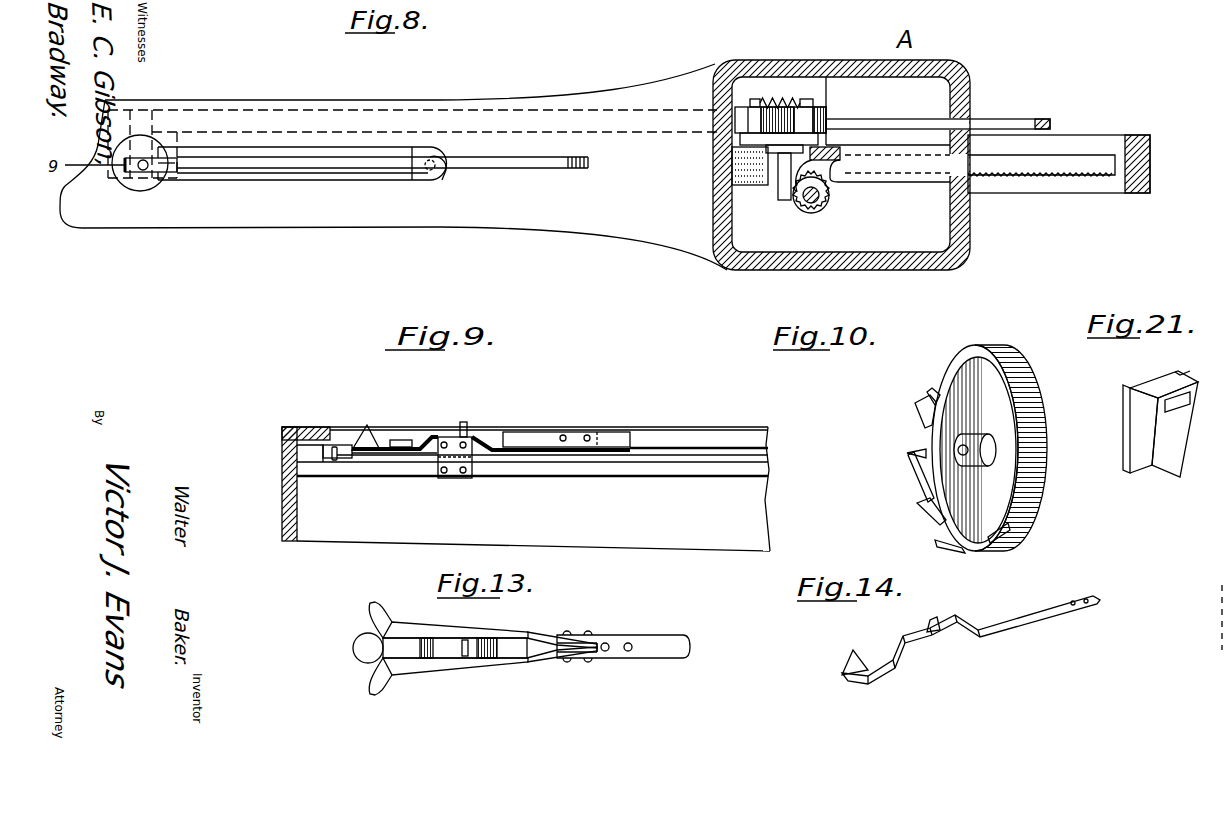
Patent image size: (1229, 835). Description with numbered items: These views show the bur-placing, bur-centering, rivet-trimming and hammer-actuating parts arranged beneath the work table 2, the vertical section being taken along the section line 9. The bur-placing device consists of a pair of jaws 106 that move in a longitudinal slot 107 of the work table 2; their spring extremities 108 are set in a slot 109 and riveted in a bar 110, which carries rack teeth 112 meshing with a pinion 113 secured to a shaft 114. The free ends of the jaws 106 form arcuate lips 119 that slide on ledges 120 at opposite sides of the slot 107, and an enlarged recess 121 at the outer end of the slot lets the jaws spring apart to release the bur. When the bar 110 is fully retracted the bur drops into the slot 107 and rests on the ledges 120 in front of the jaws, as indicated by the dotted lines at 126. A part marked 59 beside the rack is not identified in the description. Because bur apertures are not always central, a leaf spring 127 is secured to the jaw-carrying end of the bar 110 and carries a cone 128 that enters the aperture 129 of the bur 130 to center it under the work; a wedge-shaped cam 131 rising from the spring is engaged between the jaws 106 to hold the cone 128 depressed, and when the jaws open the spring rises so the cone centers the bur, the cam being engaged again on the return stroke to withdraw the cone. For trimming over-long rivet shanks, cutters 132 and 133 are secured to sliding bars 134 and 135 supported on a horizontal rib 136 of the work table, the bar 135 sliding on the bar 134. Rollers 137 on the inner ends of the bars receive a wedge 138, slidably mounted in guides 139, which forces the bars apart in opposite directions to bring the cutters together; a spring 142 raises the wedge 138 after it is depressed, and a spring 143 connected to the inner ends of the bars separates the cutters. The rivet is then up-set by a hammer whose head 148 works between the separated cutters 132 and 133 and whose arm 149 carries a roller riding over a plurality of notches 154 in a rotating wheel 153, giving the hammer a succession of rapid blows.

In FIG. 8, the work table 2 is at (298, 218).
In FIG. 8, the section line 9 is at (221, 180).
In FIG. 8, the tube 59 is at (1098, 142).
In FIG. 8, the jaws 106 is at (497, 166).
In FIG. 9, the jaws 106 is at (483, 434).
In FIG. 13, the jaws 106 is at (428, 630).
In FIG. 8, the longitudinal slot 107 is at (365, 176).
In FIG. 13, the spring extremities 108 is at (545, 636).
In FIG. 13, the slot 109 is at (583, 655).
In FIG. 13, the bar 110 is at (642, 629).
In FIG. 8, the rack teeth 112 is at (1040, 178).
In FIG. 8, the pinion 113 is at (830, 198).
In FIG. 8, the shaft 114 is at (816, 208).
In FIG. 8, the arcuate lips 119 is at (440, 160).
In FIG. 13, the arcuate lips 119 is at (378, 604).
In FIG. 8, the ledges 120 is at (412, 178).
In FIG. 8, the enlarged recess 121 is at (147, 185).
In FIG. 8, the bur position (dotted lines) 126 is at (425, 161).
In FIG. 14, the leaf spring 127 is at (975, 630).
In FIG. 9, the cone 128 is at (352, 432).
In FIG. 13, the cone 128 is at (356, 652).
In FIG. 14, the cone 128 is at (848, 662).
In FIG. 9, the aperture 129 is at (368, 426).
In FIG. 9, the bur 130 is at (380, 430).
In FIG. 9, the wedge-shaped cam 131 is at (464, 420).
In FIG. 13, the wedge-shaped cam 131 is at (468, 640).
In FIG. 14, the wedge-shaped cam 131 is at (936, 620).
In FIG. 8, the cutter 132 is at (108, 176).
In FIG. 9, the cutter 132 is at (336, 460).
In FIG. 8, the cutter 133 is at (165, 163).
In FIG. 9, the cutter 133 is at (398, 447).
In FIG. 9, the sliding bar 134 is at (640, 447).
In FIG. 9, the sliding bar 135 is at (668, 450).
In FIG. 9, the horizontal rib 136 is at (603, 480).
In FIG. 8, the rollers 137 is at (750, 130).
In FIG. 8, the wedge 138 is at (760, 153).
In FIG. 21, the wedge 138 is at (1160, 436).
In FIG. 8, the guides 139 is at (796, 155).
In FIG. 8, the spring 142 is at (786, 185).
In FIG. 8, the spring 143 is at (768, 99).
In FIG. 8, the head 148 is at (140, 167).
In FIG. 8, the arm 149 is at (1026, 125).
In FIG. 10, the wheel 153 is at (1047, 437).
In FIG. 10, the notches 154 is at (933, 522).